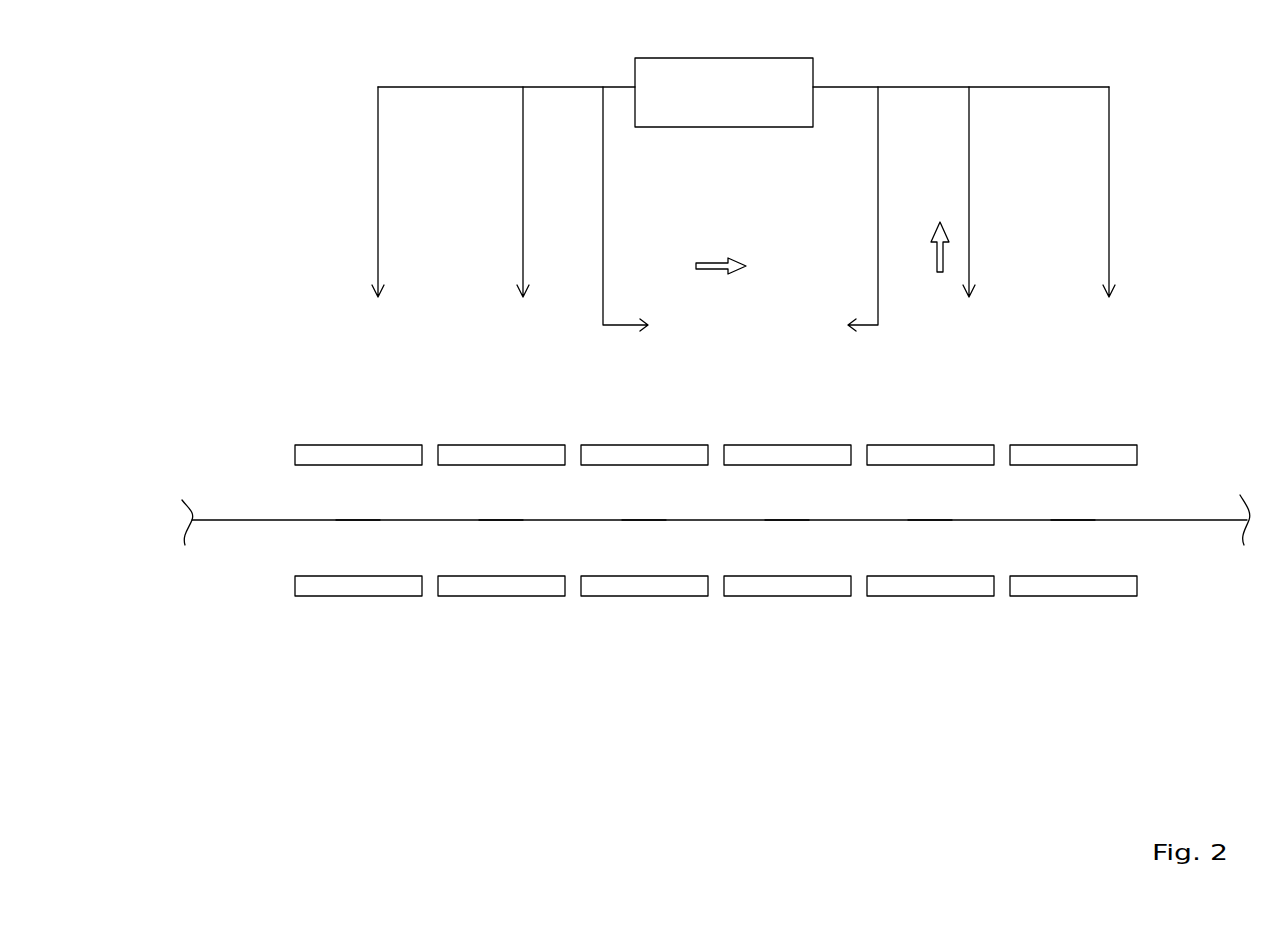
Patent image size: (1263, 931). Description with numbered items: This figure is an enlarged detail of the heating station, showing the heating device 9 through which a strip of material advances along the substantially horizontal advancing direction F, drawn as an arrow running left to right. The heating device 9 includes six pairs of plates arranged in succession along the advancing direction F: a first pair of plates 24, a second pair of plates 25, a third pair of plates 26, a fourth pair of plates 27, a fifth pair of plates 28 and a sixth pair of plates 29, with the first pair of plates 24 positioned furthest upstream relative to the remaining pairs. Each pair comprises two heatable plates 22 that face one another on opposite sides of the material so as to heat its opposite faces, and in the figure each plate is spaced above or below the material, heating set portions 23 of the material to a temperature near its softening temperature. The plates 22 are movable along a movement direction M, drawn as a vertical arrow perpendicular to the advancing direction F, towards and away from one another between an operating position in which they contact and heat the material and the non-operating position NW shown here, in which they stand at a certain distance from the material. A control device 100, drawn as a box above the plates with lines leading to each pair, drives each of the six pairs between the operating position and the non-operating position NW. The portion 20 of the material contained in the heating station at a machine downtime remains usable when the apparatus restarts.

The control device 100 is at (722, 57).
The portion of the material 20 is at (275, 490).
The heatable plates 22 is at (697, 518).
The set portions 23 is at (367, 520).
The first pair of plates 24 is at (349, 645).
The second pair of plates 25 is at (492, 645).
The third pair of plates 26 is at (635, 645).
The fourth pair of plates 27 is at (778, 645).
The fifth pair of plates 28 is at (921, 645).
The sixth pair of plates 29 is at (1064, 645).
The heating device 9 is at (745, 306).
The non-operating position NW is at (330, 338).
The advancing direction F is at (698, 262).
The movement direction M is at (937, 262).